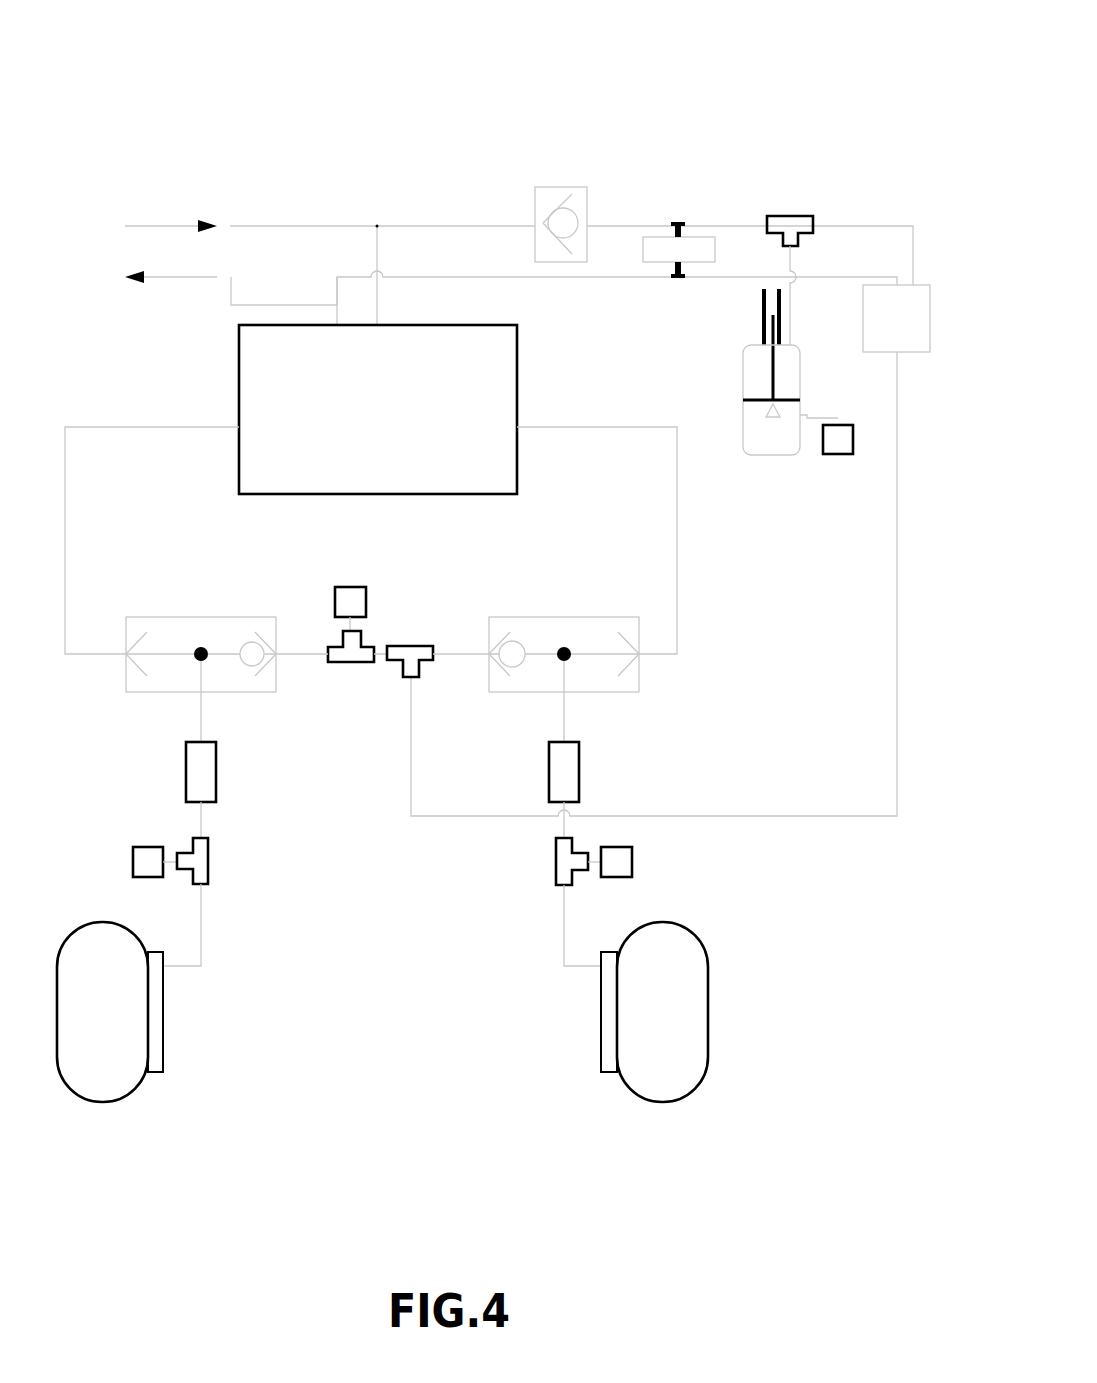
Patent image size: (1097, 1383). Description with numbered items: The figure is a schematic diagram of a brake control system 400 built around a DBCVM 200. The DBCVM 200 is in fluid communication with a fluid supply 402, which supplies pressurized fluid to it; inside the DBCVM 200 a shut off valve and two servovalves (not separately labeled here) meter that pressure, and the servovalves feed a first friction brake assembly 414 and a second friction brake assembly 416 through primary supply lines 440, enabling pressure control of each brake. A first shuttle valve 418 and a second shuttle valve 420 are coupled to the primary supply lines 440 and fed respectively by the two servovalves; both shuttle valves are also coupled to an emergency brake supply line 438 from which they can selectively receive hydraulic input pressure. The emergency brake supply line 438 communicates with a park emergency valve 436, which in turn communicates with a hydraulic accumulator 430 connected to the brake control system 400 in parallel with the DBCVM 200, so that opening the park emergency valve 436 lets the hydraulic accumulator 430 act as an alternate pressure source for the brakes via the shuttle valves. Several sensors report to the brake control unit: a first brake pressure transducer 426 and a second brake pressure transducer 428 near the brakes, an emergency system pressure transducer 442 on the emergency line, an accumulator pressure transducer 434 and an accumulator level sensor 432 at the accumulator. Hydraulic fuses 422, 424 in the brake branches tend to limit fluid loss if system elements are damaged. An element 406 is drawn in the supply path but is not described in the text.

The brake control system 400 is at (753, 68).
The fluid supply 402 is at (180, 222).
The pump 406 is at (566, 187).
The DBCVM 200 is at (528, 345).
The accumulator level sensor 432 is at (763, 317).
The hydraulic accumulator 430 is at (745, 375).
The accumulator pressure transducer 434 is at (840, 455).
The park emergency valve 436 is at (875, 343).
The emergency brake supply line 438 is at (897, 420).
The primary supply lines 440 is at (64, 483).
The second shuttle valve 420 is at (183, 617).
The emergency system pressure transducer 442 is at (367, 601).
The first shuttle valve 418 is at (559, 617).
The hydraulic fuse 424 is at (216, 762).
The second brake pressure transducer 428 is at (137, 848).
The second friction brake assembly 416 is at (163, 1014).
The hydraulic fuse 422 is at (555, 770).
The first brake pressure transducer 426 is at (633, 856).
The first friction brake assembly 414 is at (608, 1007).